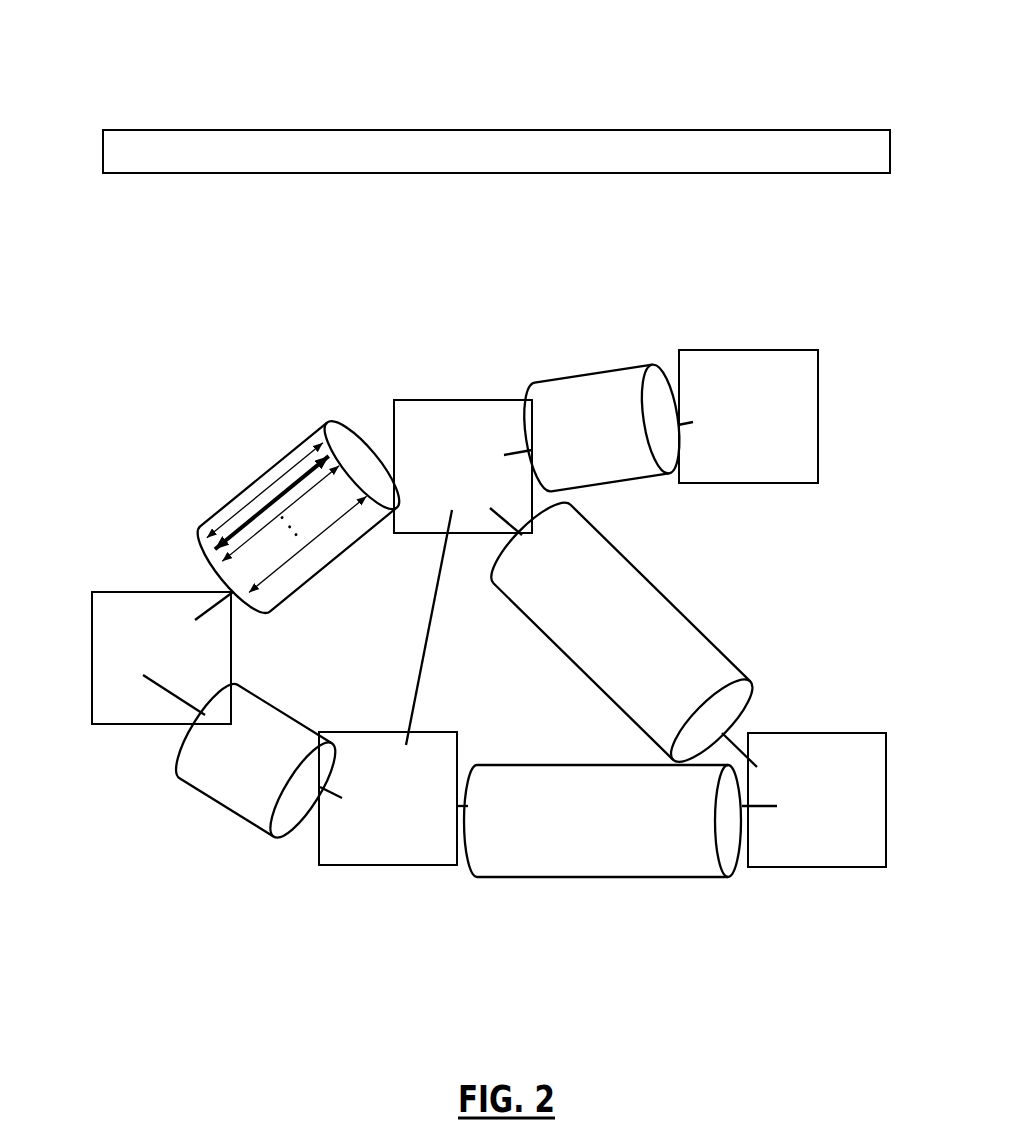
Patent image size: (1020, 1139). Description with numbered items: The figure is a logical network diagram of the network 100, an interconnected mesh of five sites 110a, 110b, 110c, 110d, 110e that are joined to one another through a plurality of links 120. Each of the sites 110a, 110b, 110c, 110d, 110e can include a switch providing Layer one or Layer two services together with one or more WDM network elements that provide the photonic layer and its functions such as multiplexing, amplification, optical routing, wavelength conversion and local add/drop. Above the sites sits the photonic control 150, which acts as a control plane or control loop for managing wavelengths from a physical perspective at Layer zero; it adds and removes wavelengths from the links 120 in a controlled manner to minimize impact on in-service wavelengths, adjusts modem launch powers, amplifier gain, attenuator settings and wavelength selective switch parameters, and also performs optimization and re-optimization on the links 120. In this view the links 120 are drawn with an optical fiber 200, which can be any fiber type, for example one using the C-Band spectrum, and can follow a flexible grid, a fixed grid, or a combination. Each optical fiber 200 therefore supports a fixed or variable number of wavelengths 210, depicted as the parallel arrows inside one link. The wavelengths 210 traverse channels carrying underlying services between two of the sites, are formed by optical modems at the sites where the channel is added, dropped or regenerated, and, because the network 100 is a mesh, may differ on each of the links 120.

The network 100 is at (572, 62).
The photonic control 150 is at (645, 130).
The site 110a is at (92, 693).
The site 110b is at (502, 400).
The site 110c is at (712, 483).
The site 110d is at (777, 875).
The site 110e is at (319, 845).
The optical fiber 200 is at (698, 622).
The wavelengths 210 is at (337, 443).
The links 120 is at (735, 730).